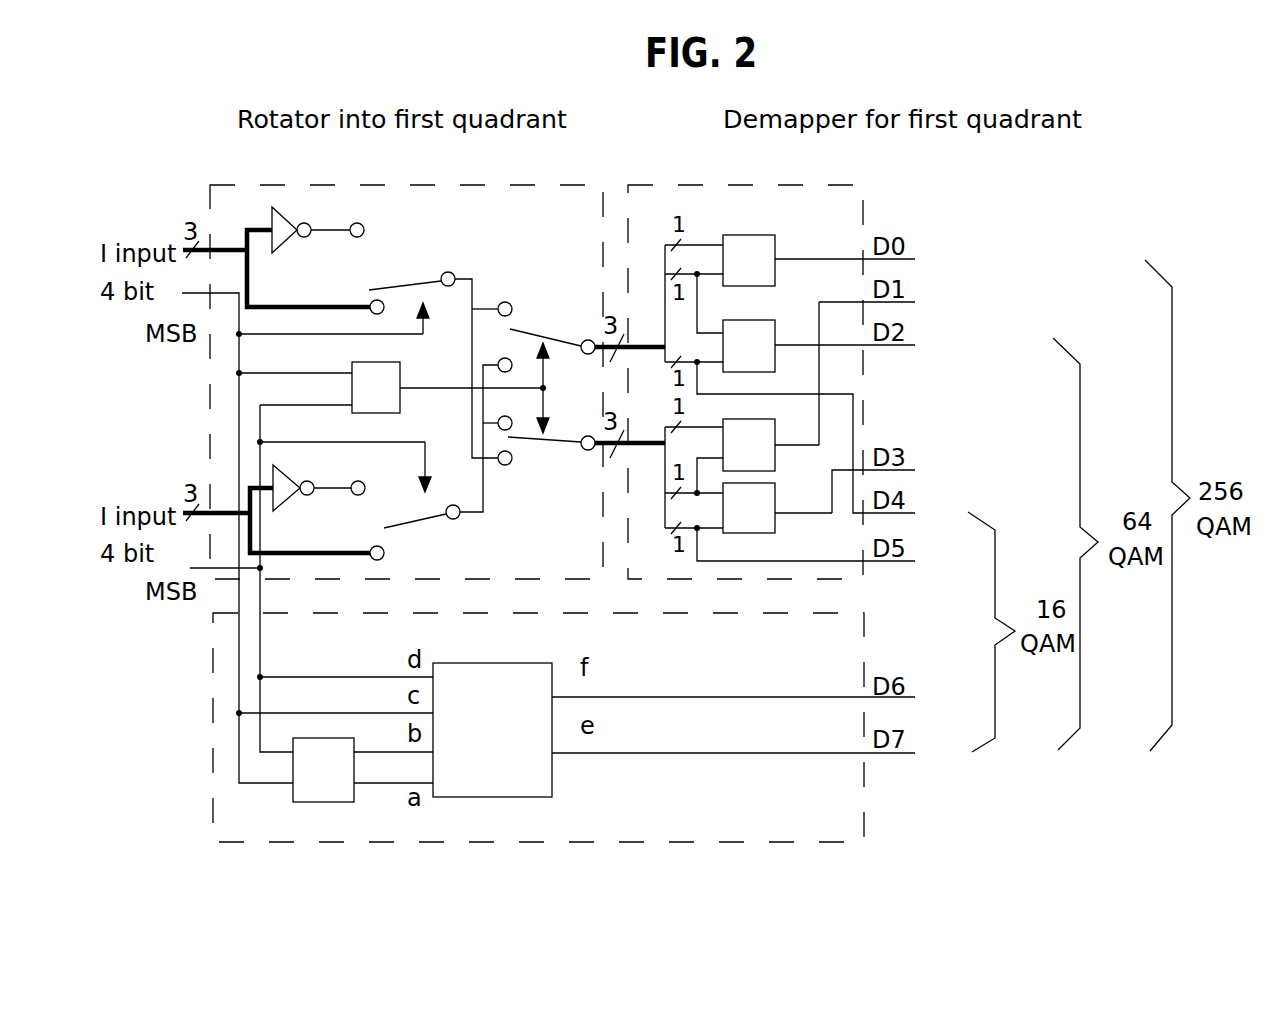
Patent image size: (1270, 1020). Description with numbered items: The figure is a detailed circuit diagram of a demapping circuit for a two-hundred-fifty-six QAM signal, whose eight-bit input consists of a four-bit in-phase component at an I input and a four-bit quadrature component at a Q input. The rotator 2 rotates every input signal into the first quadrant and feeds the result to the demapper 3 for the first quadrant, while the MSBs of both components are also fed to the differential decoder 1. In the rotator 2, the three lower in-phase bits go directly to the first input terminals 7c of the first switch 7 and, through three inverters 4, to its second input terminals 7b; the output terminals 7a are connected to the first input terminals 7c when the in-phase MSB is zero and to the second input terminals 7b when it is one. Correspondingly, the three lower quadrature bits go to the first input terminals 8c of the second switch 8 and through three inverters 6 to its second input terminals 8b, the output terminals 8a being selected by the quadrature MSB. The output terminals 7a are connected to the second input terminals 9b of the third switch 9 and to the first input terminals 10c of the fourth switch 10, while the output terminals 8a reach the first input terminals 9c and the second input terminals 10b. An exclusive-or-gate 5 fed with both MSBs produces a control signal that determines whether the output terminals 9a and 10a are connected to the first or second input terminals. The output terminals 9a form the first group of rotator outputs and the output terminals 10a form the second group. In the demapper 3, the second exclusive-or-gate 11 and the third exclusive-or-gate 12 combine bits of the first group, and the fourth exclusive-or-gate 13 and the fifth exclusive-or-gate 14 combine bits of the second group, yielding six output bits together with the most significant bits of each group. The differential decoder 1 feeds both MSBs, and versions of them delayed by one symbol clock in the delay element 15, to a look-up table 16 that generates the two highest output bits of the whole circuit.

The differential decoder 1 is at (842, 802).
The rotator 2 is at (243, 203).
The demapper for the first quadrant 3 is at (843, 203).
The inverters 4 is at (282, 236).
The exclusive-or-gate 5 is at (396, 407).
The inverters 6 is at (284, 493).
The first switch 7 is at (433, 329).
The output terminals of the first switch 7a is at (447, 261).
The second input terminals of the first switch 7b is at (345, 218).
The first input terminals of the first switch 7c is at (391, 311).
The second switch 8 is at (441, 446).
The output terminals of the second switch 8a is at (452, 496).
The second input terminals of the second switch 8b is at (348, 475).
The first input terminals of the second switch 8c is at (392, 557).
The third switch 9 is at (545, 304).
The output terminals of the third switch 9a is at (580, 330).
The second input terminals of the third switch 9b is at (505, 289).
The first input terminals of the third switch 9c is at (506, 351).
The fourth switch 10 is at (544, 466).
The output terminals of the fourth switch 10a is at (575, 424).
The second input terminals of the fourth switch 10b is at (509, 409).
The first input terminals of the fourth switch 10c is at (507, 477).
The second exclusive-or-gate 11 is at (758, 243).
The third exclusive-or-gate 12 is at (760, 326).
The fourth exclusive-or-gate 13 is at (770, 442).
The fifth exclusive-or-gate 14 is at (770, 517).
The delay element 15 is at (334, 784).
The look-up table 16 is at (535, 778).